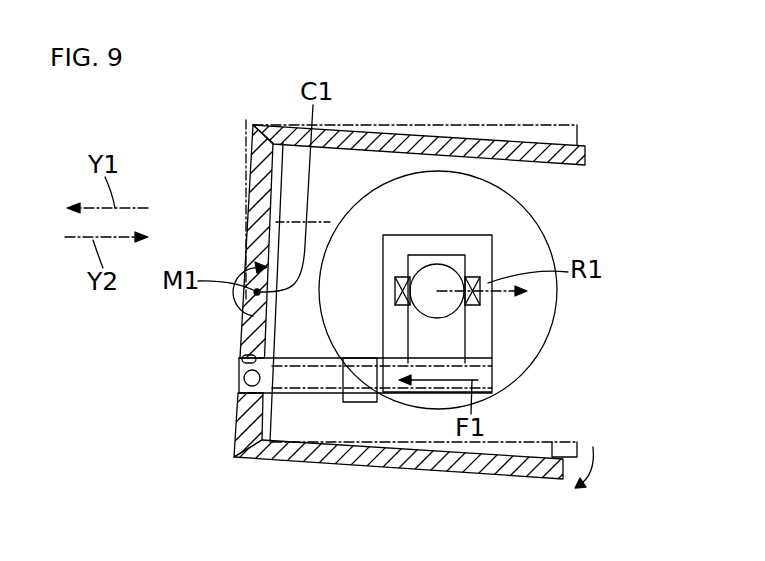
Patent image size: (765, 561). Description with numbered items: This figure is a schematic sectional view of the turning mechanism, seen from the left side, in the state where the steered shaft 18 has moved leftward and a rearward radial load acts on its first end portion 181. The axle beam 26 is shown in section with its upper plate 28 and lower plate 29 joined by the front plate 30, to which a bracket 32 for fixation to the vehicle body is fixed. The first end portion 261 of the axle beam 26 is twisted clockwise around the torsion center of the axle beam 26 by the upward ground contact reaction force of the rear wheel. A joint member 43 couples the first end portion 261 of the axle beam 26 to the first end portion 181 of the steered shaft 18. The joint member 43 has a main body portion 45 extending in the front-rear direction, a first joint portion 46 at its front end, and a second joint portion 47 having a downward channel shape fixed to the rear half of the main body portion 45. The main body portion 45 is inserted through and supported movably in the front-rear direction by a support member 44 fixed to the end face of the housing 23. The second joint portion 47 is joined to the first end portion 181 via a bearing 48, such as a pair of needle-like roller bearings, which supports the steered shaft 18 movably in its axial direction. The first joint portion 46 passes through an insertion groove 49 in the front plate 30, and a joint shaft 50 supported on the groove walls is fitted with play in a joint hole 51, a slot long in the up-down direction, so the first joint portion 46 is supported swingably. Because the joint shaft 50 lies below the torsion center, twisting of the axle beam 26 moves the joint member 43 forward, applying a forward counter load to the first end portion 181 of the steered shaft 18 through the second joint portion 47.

The steered shaft 18 is at (441, 325).
The first end portion of the steered shaft 181 is at (452, 314).
The housing 23 is at (546, 237).
The axle beam 26 is at (402, 130).
The upper plate 28 is at (493, 153).
The lower plate 29 is at (500, 468).
The front plate 30 is at (252, 168).
The bracket 32 is at (293, 237).
The joint member 43 is at (425, 398).
The support member 44 is at (363, 403).
The main body portion 45 is at (312, 385).
The first joint portion 46 is at (264, 392).
The second joint portion 47 is at (480, 320).
The bearing 48 is at (475, 277).
The insertion groove 49 is at (245, 359).
The joint shaft 50 is at (245, 388).
The joint hole 51 is at (245, 381).
The first end portion of the axle beam 261 is at (236, 445).